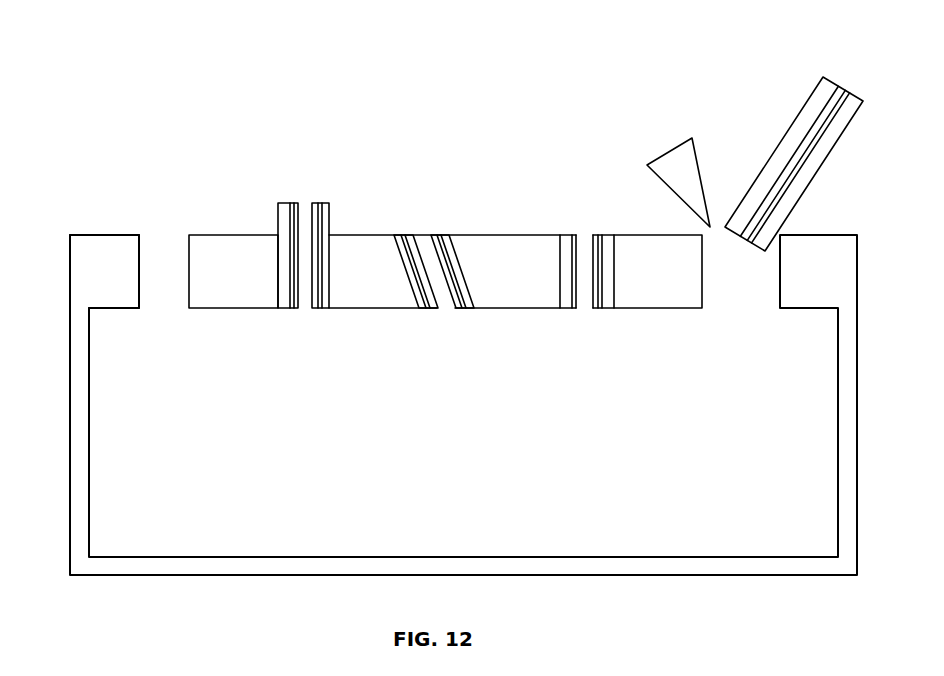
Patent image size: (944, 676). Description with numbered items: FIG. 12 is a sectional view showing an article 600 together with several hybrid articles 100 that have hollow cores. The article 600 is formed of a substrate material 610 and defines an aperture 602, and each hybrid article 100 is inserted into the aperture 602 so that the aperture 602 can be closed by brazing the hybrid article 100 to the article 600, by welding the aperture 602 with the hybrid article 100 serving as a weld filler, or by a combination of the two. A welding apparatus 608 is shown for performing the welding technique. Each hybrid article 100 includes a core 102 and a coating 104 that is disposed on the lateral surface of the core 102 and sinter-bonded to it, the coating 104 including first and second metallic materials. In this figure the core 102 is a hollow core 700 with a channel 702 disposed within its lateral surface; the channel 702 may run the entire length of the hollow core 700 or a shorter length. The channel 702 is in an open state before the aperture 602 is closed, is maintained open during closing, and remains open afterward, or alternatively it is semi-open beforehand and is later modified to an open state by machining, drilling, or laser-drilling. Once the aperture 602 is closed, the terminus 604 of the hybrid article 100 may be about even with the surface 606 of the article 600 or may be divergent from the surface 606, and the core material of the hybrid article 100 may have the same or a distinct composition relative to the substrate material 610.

The hybrid article 100 is at (393, 222).
The core 102 is at (295, 221).
The coating 104 is at (285, 224).
The article 600 is at (123, 267).
The aperture 602 is at (167, 293).
The terminus 604 is at (200, 235).
The surface 606 is at (307, 205).
The welding apparatus 608 is at (678, 177).
The substrate material 610 is at (110, 268).
The hollow core 700 is at (292, 221).
The channel 702 is at (305, 290).